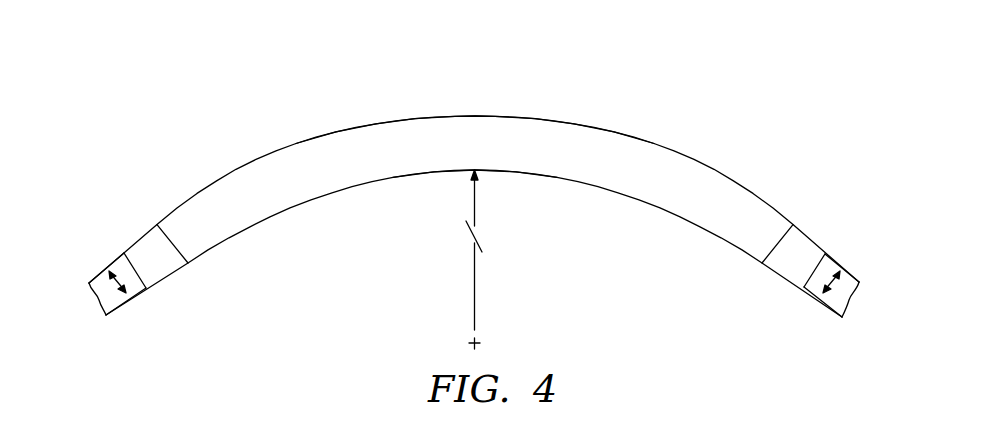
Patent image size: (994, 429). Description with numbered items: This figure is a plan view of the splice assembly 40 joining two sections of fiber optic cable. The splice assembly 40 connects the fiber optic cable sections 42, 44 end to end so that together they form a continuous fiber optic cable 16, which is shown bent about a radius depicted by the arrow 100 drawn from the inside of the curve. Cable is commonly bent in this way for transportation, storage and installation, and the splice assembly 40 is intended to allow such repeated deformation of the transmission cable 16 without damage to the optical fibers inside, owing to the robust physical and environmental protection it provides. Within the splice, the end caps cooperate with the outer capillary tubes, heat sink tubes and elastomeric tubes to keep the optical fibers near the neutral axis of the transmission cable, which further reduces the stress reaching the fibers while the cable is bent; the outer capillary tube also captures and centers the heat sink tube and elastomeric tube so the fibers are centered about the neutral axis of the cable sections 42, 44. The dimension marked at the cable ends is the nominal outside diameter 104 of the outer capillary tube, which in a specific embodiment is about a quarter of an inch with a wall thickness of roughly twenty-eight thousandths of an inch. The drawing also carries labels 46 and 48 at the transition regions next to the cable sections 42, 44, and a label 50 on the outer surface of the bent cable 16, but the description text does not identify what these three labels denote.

The fiber optic cable 16 is at (474, 198).
The splice assembly 40 is at (475, 102).
The outer convex surface 50 is at (625, 136).
The arrow 100 is at (476, 204).
The fiber optic cable section 42 is at (141, 295).
The first transition section 46 is at (181, 279).
The fiber optic cable section 44 is at (827, 255).
The second transition section 48 is at (775, 276).
The nominal outside diameter 104 is at (100, 289).